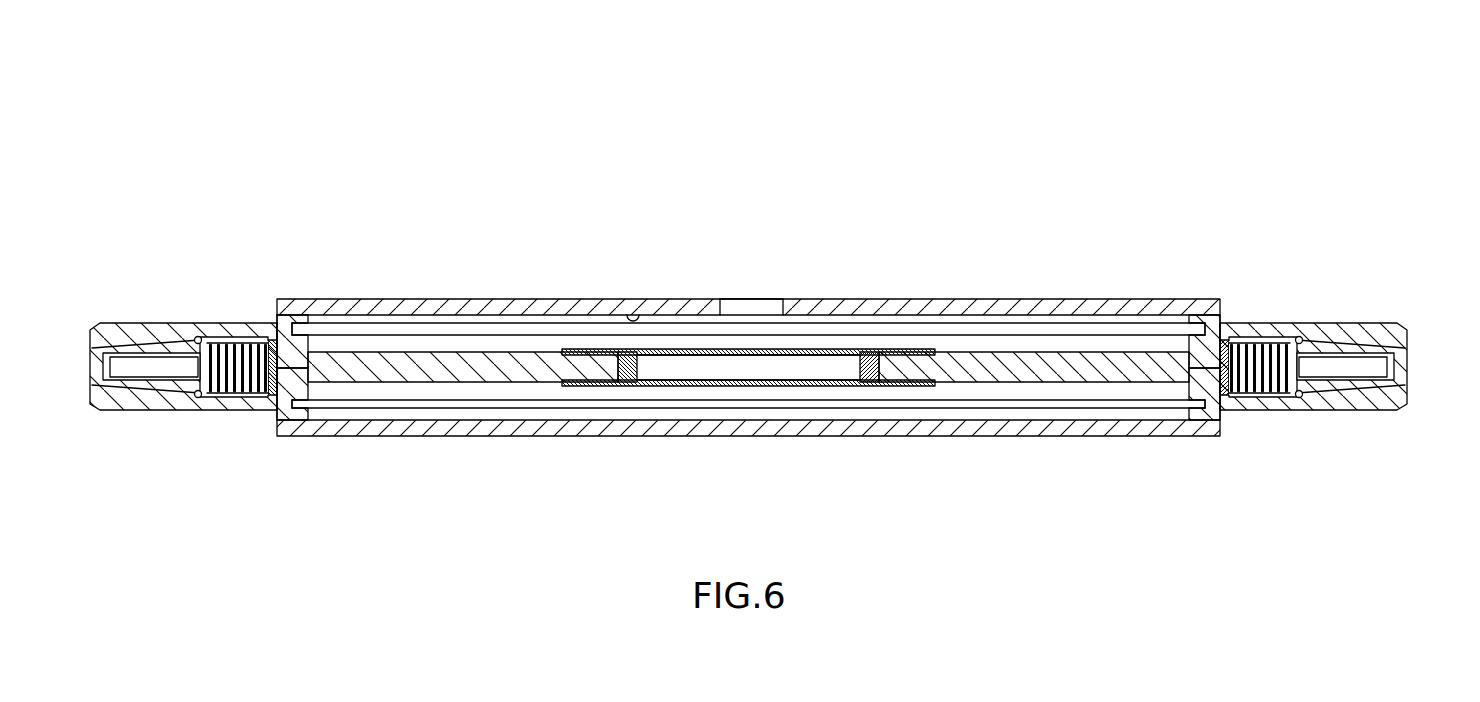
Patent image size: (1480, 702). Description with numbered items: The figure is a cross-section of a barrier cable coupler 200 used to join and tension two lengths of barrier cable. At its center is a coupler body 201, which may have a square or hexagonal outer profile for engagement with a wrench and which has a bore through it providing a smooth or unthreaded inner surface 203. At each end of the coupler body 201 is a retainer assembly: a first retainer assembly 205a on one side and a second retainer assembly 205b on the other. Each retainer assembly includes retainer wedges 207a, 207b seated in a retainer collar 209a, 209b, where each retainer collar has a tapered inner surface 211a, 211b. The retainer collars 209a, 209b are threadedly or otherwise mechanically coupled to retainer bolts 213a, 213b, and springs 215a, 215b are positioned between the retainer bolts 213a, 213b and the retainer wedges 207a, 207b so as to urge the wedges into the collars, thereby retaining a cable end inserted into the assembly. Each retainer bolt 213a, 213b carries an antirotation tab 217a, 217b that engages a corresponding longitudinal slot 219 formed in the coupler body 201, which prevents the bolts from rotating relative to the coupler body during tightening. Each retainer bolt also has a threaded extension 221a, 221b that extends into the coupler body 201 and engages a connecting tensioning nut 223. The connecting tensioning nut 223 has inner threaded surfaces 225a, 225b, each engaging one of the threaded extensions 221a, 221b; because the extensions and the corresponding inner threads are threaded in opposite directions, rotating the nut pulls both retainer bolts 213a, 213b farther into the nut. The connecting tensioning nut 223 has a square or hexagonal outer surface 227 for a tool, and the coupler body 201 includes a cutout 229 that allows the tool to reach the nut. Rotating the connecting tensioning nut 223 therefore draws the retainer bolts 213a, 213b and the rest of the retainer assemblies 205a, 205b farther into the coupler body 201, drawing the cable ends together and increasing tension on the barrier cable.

The barrier cable coupler 200 is at (262, 90).
The coupler body 201 is at (542, 300).
The inner surface 203 is at (405, 327).
The first retainer assembly 205a is at (217, 290).
The second retainer assembly 205b is at (1270, 300).
The retainer wedge 207a is at (160, 392).
The retainer wedge 207b is at (1343, 390).
The retainer collar 209a is at (125, 323).
The retainer collar 209b is at (1332, 323).
The tapered inner surface 211a is at (145, 380).
The tapered inner surface 211b is at (1362, 355).
The retainer bolt 213a is at (300, 398).
The retainer bolt 213b is at (1202, 370).
The spring 215a is at (253, 333).
The spring 215b is at (1215, 343).
The tab 217a is at (300, 322).
The tab 217b is at (1198, 322).
The longitudinal slot 219 is at (645, 313).
The threaded extension 221a is at (392, 368).
The threaded extension 221b is at (1097, 368).
The connecting tensioning nut 223 is at (842, 349).
The inner threaded surface 225a is at (640, 368).
The inner threaded surface 225b is at (862, 370).
The outer surface 227 is at (797, 349).
The cutout 229 is at (733, 290).